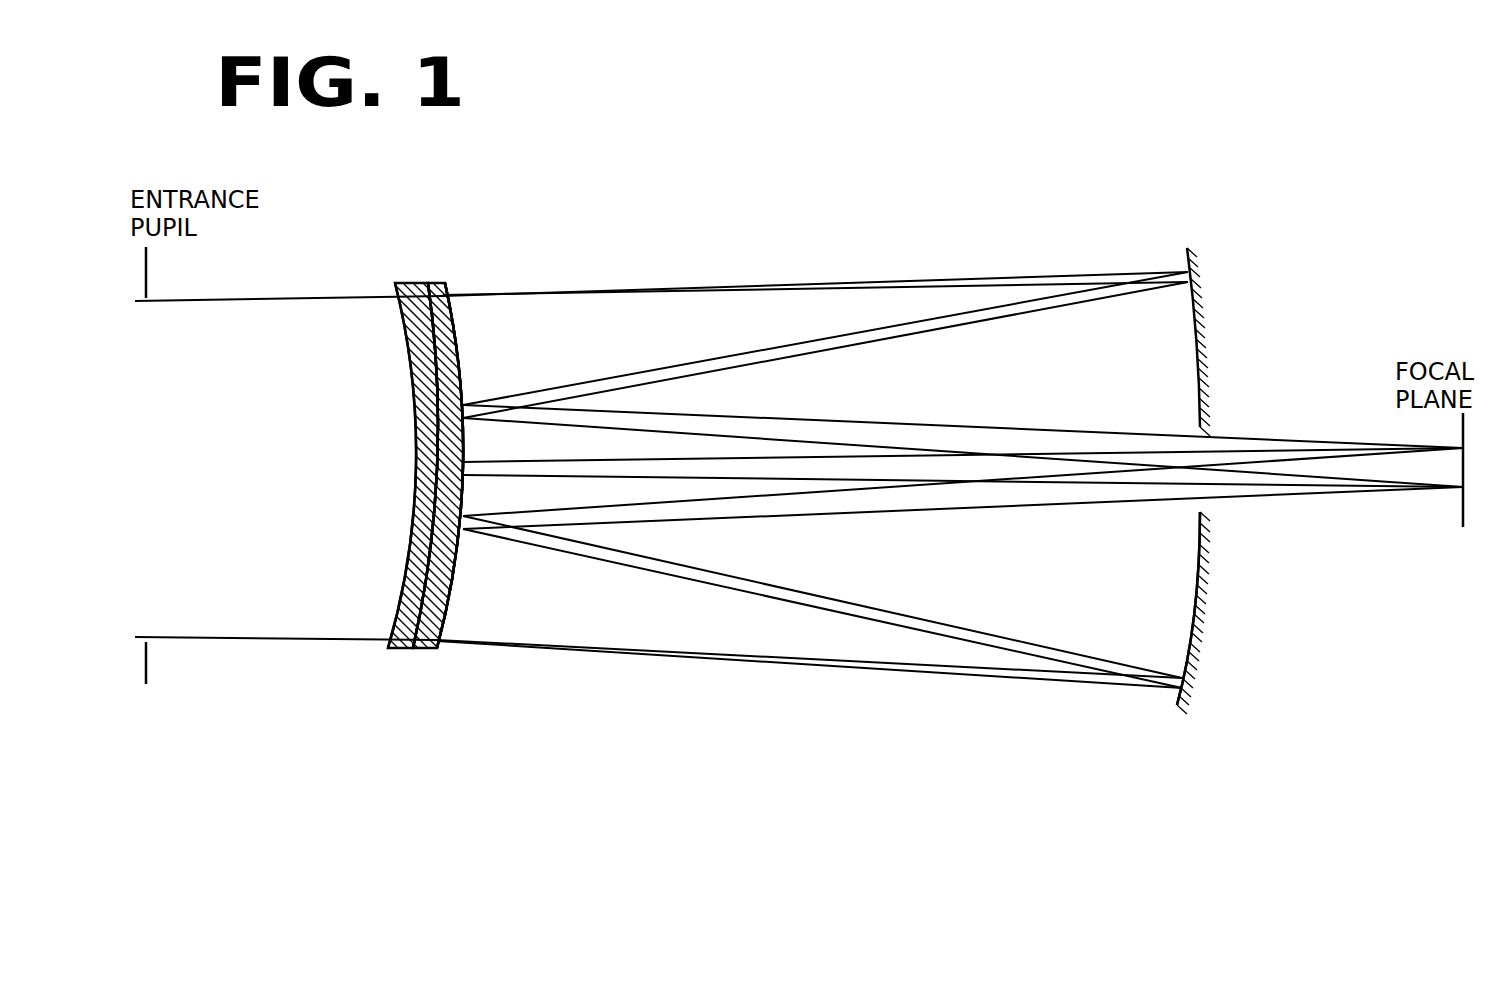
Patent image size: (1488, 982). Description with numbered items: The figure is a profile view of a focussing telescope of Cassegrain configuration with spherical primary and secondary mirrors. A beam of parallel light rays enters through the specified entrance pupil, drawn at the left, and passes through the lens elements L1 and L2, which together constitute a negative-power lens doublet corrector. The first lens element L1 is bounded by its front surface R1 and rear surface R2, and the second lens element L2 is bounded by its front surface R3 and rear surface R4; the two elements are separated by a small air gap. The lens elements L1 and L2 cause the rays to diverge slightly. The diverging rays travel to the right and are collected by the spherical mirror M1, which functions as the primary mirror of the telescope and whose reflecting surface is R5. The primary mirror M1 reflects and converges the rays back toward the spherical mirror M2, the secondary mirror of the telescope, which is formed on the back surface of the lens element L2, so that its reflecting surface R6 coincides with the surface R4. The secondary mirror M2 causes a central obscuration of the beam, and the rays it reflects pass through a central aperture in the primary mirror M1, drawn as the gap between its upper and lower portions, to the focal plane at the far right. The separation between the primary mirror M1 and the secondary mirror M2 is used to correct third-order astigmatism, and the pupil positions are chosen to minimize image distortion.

The lens element L1 is at (408, 282).
The lens element L2 is at (433, 282).
The spherical mirror M1 is at (1187, 250).
The spherical mirror M2 is at (463, 403).
The radius R1 is at (407, 596).
The radius R2 is at (405, 650).
The radius R3 is at (428, 528).
The radius R4 is at (452, 570).
The radius R5 is at (1177, 703).
The radius R6 is at (461, 520).